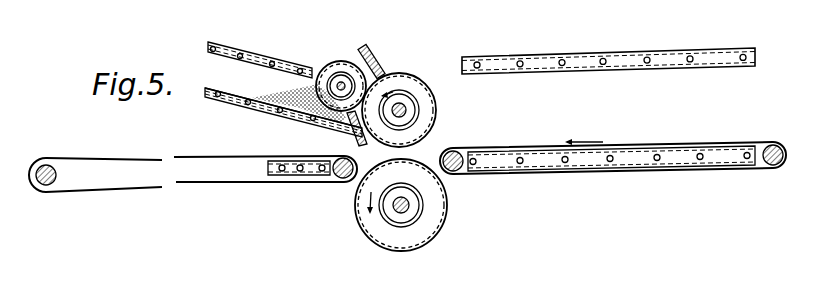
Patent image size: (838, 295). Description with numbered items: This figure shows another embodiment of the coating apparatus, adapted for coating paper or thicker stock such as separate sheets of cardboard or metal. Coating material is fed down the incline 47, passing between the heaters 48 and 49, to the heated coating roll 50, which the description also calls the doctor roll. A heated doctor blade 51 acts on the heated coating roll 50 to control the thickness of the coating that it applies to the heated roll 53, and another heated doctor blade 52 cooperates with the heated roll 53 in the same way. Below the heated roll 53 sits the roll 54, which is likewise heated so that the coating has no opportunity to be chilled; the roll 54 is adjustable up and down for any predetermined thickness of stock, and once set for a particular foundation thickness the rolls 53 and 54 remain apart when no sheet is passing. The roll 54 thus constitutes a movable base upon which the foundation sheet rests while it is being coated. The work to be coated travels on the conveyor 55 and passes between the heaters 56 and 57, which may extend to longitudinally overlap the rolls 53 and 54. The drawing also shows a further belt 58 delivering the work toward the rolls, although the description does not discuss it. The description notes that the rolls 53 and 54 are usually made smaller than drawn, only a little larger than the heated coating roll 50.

The incline 47 is at (240, 77).
The heater 48 is at (257, 52).
The heater 49 is at (262, 110).
The heated coating roll 50 is at (338, 61).
The heated doctor blade 51 is at (414, 97).
The heated doctor blade 52 is at (381, 68).
The heated roll 53 is at (437, 114).
The roll 54 is at (417, 251).
The conveyor 55 is at (648, 178).
The heater 56 is at (645, 72).
The heater 57 is at (575, 170).
The delivery belt 58 is at (213, 185).